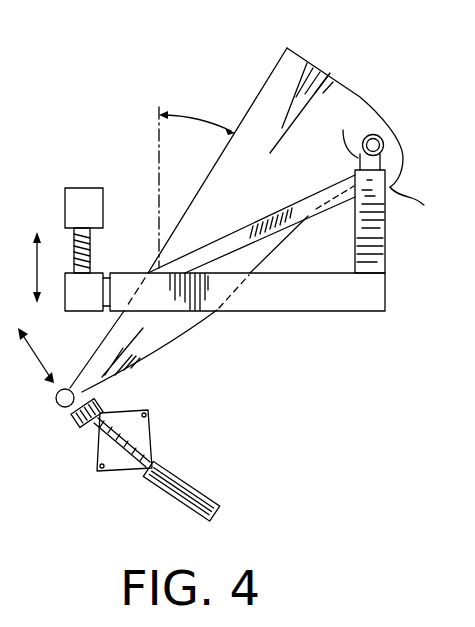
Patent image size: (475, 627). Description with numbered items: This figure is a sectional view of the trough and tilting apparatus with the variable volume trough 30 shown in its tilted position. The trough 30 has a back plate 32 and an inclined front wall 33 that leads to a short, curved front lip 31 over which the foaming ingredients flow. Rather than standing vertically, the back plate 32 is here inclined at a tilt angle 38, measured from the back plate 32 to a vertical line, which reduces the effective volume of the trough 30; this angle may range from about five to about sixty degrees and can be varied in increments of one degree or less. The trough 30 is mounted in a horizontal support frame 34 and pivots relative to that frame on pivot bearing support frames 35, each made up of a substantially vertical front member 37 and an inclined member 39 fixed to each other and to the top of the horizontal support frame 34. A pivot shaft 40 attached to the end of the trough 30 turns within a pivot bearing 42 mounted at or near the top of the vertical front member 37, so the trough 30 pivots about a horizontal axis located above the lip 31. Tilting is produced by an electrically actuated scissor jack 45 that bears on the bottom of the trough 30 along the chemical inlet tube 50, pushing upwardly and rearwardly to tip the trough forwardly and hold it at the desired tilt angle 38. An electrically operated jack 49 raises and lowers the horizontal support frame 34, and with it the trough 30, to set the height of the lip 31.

The variable volume trough 30 is at (271, 72).
The lip 31 is at (419, 211).
The back plate 32 is at (249, 108).
The inclined front wall 33 is at (190, 337).
The horizontal support frame 34 is at (332, 311).
The pivot bearing support frame 35 is at (385, 232).
The vertical front member 37 is at (377, 262).
The tilt angle 38 is at (185, 117).
The inclined member 39 is at (250, 233).
The pivot shaft 40 is at (373, 134).
The pivot bearing 42 is at (343, 140).
The electrically actuated scissor jack 45 is at (150, 430).
The electrically operated jack 49 is at (90, 188).
The chemical inlet tube 50 is at (57, 406).